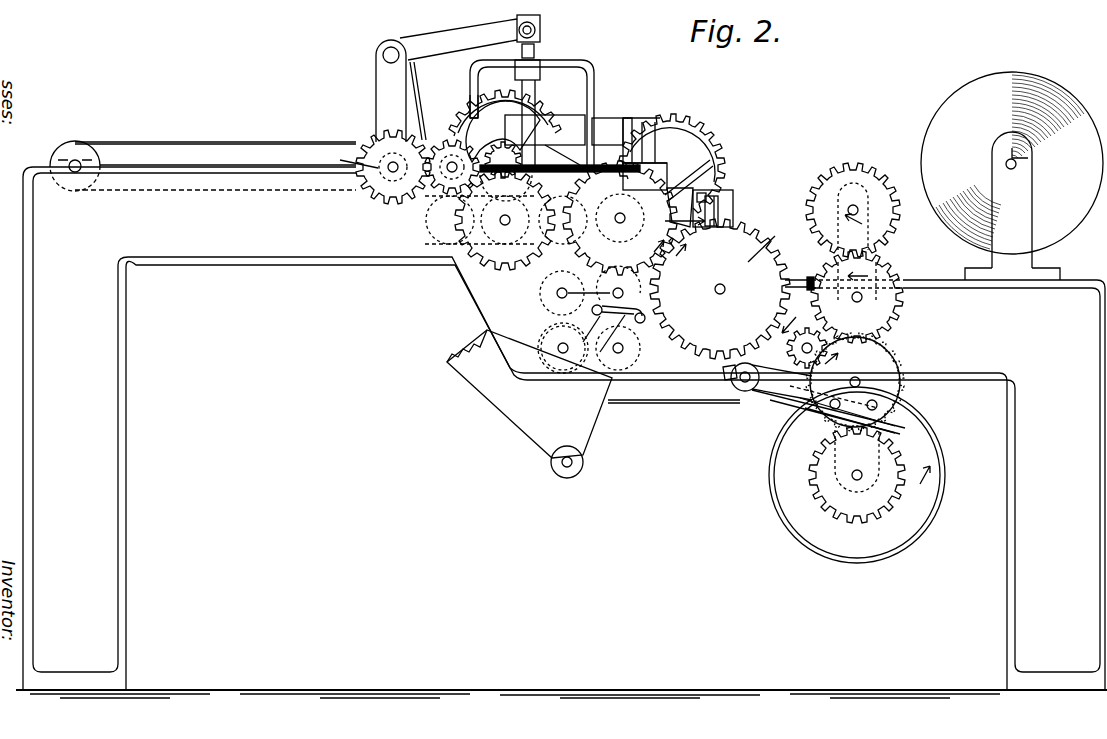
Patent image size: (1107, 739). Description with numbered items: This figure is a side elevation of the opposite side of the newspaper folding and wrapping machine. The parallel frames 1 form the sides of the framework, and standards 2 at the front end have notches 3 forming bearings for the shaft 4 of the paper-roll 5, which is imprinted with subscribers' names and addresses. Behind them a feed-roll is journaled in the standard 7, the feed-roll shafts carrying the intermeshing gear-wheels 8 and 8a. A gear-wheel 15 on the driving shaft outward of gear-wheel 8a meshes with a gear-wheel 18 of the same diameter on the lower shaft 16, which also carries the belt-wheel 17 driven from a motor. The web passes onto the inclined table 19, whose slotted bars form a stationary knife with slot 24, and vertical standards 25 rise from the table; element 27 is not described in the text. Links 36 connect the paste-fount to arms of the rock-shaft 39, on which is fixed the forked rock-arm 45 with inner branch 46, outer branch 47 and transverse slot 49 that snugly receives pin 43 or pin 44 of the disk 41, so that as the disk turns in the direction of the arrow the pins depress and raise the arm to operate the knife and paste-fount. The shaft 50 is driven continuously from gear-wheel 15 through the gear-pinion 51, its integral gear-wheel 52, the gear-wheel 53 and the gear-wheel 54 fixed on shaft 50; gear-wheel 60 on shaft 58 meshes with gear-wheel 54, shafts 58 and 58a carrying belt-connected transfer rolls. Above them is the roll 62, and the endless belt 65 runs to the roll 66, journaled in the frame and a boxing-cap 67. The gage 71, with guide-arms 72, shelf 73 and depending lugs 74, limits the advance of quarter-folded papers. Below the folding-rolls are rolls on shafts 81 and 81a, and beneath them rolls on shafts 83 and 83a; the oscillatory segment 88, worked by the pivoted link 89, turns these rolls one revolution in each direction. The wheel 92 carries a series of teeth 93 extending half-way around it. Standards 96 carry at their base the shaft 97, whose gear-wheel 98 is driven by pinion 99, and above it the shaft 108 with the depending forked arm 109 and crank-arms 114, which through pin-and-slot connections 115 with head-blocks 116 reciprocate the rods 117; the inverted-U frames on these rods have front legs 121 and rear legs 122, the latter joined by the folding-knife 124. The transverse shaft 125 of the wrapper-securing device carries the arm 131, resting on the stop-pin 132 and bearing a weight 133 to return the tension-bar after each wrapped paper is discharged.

The parallel frames 1 is at (222, 243).
The standards 2 is at (1012, 206).
The notches 3 is at (1028, 152).
The shaft 4 is at (1016, 166).
The paper-roll 5 is at (1012, 72).
The standard 7 is at (880, 250).
The gear-wheel 8 is at (853, 226).
The gear-wheel 8a is at (858, 297).
The gear-wheel 15 is at (905, 385).
The fourth shaft 16 is at (857, 470).
The belt-wheel 17 is at (857, 475).
The gear-wheel 18 is at (857, 475).
The inclined table 19 is at (729, 289).
The slot 24 is at (718, 207).
The vertical standards 25 is at (733, 196).
The arm 27 is at (686, 200).
The links 36 is at (676, 221).
The rock-shaft 39 is at (740, 390).
The disk 41 is at (855, 382).
The pin 43 is at (880, 410).
The outwardly-projecting pin 44 is at (853, 405).
The forked rock-arm 45 is at (771, 381).
The inner branch 46 is at (864, 387).
The outer branch 47 is at (890, 430).
The transverse slot 49 is at (785, 402).
The shaft 50 is at (620, 215).
The gear-pinion 51 is at (788, 342).
The gear-wheel 52 is at (807, 343).
The gear-wheel 53 is at (771, 242).
The gear-wheel 54 is at (620, 218).
The shaft 58 is at (534, 220).
The shaft 58a is at (450, 230).
The gear-wheel 60 is at (505, 220).
The roll 62 is at (506, 171).
The endless belt 65 is at (236, 142).
The roll 66 is at (78, 150).
The boxing-cap 67 is at (68, 162).
The gage 71 is at (646, 112).
The guide-arms 72 is at (560, 143).
The shelf 73 is at (607, 131).
The depending lugs 74 is at (638, 140).
The shaft 81 is at (620, 284).
The shaft 81a is at (556, 293).
The shaft 83 is at (624, 349).
The shaft 83a is at (557, 348).
The oscillatory segment 88 is at (529, 404).
The pivoted link 89 is at (674, 394).
The wheel 92 is at (689, 171).
The series of teeth 93 is at (680, 122).
The standards 96 is at (391, 91).
The shaft 97 is at (347, 159).
The gear-wheel 98 is at (393, 167).
The pinion 99 is at (452, 167).
The shaft 108 is at (390, 52).
The forked arm 109 is at (413, 96).
The crank-arms 114 is at (458, 39).
The pin-and-slot connection 115 is at (540, 22).
The head-blocks 116 is at (540, 44).
The reciprocatory rods 117 is at (535, 95).
The front legs 121 is at (600, 86).
The rear legs 122 is at (470, 80).
The folding-knife 124 is at (490, 96).
The transverse shaft 125 is at (589, 299).
The arm 131 is at (609, 320).
The stop-pin 132 is at (587, 338).
The weight 133 is at (625, 331).